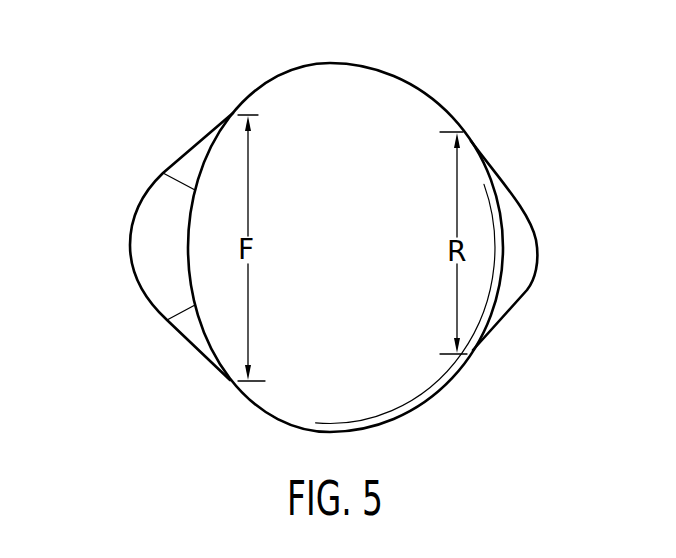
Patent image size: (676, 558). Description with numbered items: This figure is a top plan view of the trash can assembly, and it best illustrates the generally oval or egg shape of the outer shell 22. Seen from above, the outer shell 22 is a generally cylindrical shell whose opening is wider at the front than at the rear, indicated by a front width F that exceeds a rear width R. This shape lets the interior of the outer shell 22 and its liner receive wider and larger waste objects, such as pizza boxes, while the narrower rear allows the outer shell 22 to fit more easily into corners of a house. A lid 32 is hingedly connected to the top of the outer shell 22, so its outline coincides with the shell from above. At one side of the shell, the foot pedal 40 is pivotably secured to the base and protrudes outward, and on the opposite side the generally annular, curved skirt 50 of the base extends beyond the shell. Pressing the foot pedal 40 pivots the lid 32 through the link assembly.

The outer shell 22 is at (266, 50).
The lid 32 is at (410, 102).
The foot pedal 40 is at (135, 252).
The skirt 50 is at (520, 228).